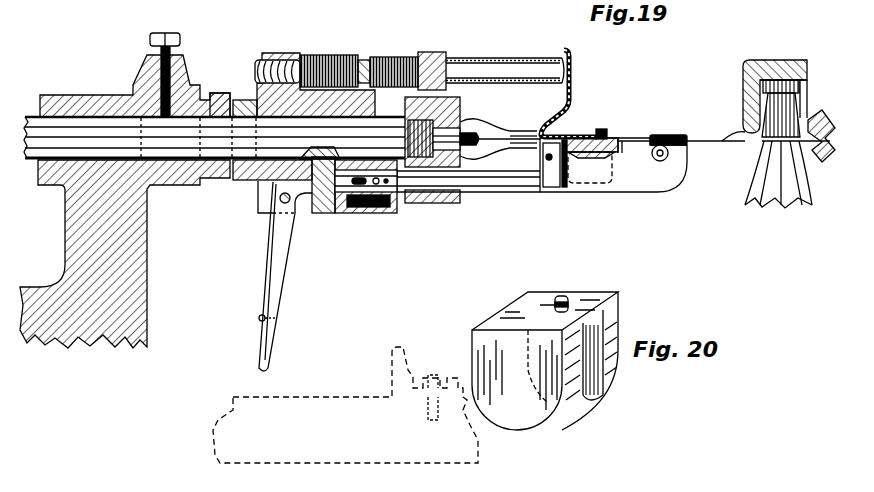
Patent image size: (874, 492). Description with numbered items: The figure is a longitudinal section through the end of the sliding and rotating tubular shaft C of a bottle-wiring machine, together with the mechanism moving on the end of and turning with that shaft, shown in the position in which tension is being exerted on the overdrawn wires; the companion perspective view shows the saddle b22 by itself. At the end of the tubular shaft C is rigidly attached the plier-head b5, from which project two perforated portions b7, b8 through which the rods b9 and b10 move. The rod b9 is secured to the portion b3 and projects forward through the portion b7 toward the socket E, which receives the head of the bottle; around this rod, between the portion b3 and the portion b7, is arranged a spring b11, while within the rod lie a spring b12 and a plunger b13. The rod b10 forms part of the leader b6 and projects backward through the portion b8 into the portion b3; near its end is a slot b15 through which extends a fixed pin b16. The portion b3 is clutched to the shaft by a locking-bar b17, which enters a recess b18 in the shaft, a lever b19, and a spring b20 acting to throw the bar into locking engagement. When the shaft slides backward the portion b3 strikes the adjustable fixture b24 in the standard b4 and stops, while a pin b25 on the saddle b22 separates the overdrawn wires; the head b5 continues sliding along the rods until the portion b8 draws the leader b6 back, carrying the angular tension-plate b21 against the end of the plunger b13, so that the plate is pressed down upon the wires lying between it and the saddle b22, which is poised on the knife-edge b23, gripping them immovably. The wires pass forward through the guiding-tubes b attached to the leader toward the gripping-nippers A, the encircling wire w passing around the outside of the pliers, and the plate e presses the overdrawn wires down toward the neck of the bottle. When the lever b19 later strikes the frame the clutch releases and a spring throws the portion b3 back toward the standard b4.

In FIG. 19, the standard b4 is at (83, 96).
In FIG. 19, the tubular shaft C is at (214, 137).
In FIG. 19, the adjustable fixture b24 is at (218, 100).
In FIG. 19, the portion b3 is at (281, 55).
In FIG. 19, the spring b11 is at (338, 56).
In FIG. 19, the spring b12 is at (392, 57).
In FIG. 19, the perforated portion b7 is at (431, 53).
In FIG. 19, the rod b9 is at (472, 59).
In FIG. 19, the plunger b13 is at (556, 62).
In FIG. 19, the angular tension-plate b21 is at (563, 111).
In FIG. 19, the plier-head b5 is at (460, 104).
In FIG. 19, the recess b18 is at (318, 150).
In FIG. 19, the rod b10 is at (506, 193).
In FIG. 19, the perforated portion b8 is at (447, 203).
In FIG. 19, the locking-bar b17 is at (318, 213).
In FIG. 19, the slot b15 is at (368, 212).
In FIG. 19, the fixed pin b16 is at (383, 212).
In FIG. 19, the lever b19 is at (280, 256).
In FIG. 19, the spring b20 is at (266, 241).
In FIG. 19, the guiding-tubes b is at (667, 138).
In FIG. 19, the leader b6 is at (590, 163).
In FIG. 19, the saddle b22 is at (599, 137).
In FIG. 20, the saddle b22 is at (596, 297).
In FIG. 19, the pin b25 is at (601, 129).
In FIG. 20, the pin b25 is at (561, 296).
In FIG. 19, the knife-edge b23 is at (594, 153).
In FIG. 19, the encircling wire w is at (741, 142).
In FIG. 19, the socket E is at (782, 96).
In FIG. 19, the plate e is at (746, 98).
In FIG. 19, the gripping-nippers A is at (821, 148).